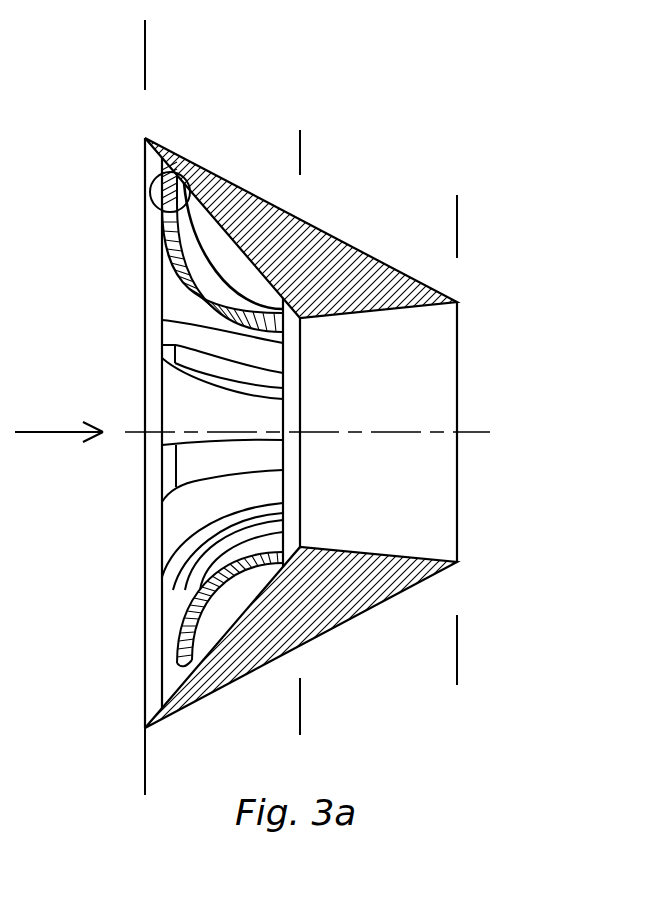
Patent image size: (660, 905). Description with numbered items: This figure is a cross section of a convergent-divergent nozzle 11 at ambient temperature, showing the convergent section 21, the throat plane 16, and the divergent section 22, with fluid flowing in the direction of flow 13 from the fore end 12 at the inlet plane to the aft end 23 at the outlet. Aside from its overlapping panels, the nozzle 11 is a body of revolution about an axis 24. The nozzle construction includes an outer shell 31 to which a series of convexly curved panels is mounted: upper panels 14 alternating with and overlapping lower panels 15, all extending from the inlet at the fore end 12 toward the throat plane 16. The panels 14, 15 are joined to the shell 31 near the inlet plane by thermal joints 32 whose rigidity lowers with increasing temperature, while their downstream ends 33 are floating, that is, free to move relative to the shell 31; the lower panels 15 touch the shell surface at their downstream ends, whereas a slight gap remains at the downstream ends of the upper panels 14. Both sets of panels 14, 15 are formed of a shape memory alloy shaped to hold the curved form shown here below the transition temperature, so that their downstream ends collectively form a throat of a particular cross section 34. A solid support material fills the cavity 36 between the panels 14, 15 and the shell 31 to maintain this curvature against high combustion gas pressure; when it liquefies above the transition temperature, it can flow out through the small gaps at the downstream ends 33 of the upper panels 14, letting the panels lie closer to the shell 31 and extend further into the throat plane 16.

The convergent-divergent nozzle 11 is at (115, 115).
The fore end 12 is at (145, 75).
The direction of fluid flow 13 is at (70, 432).
The upper panels 14 is at (190, 285).
The lower panels 15 is at (190, 247).
The throat plane 16 is at (300, 165).
The convergent section 21 is at (300, 50).
The divergent section 22 is at (455, 50).
The aft end 23 is at (457, 214).
The axis 24 is at (443, 420).
The outer shell 31 is at (343, 607).
The thermal joints 32 is at (150, 183).
The downstream ends 33 is at (363, 252).
The throat cross section 34 is at (327, 547).
The cavity 36 is at (217, 252).